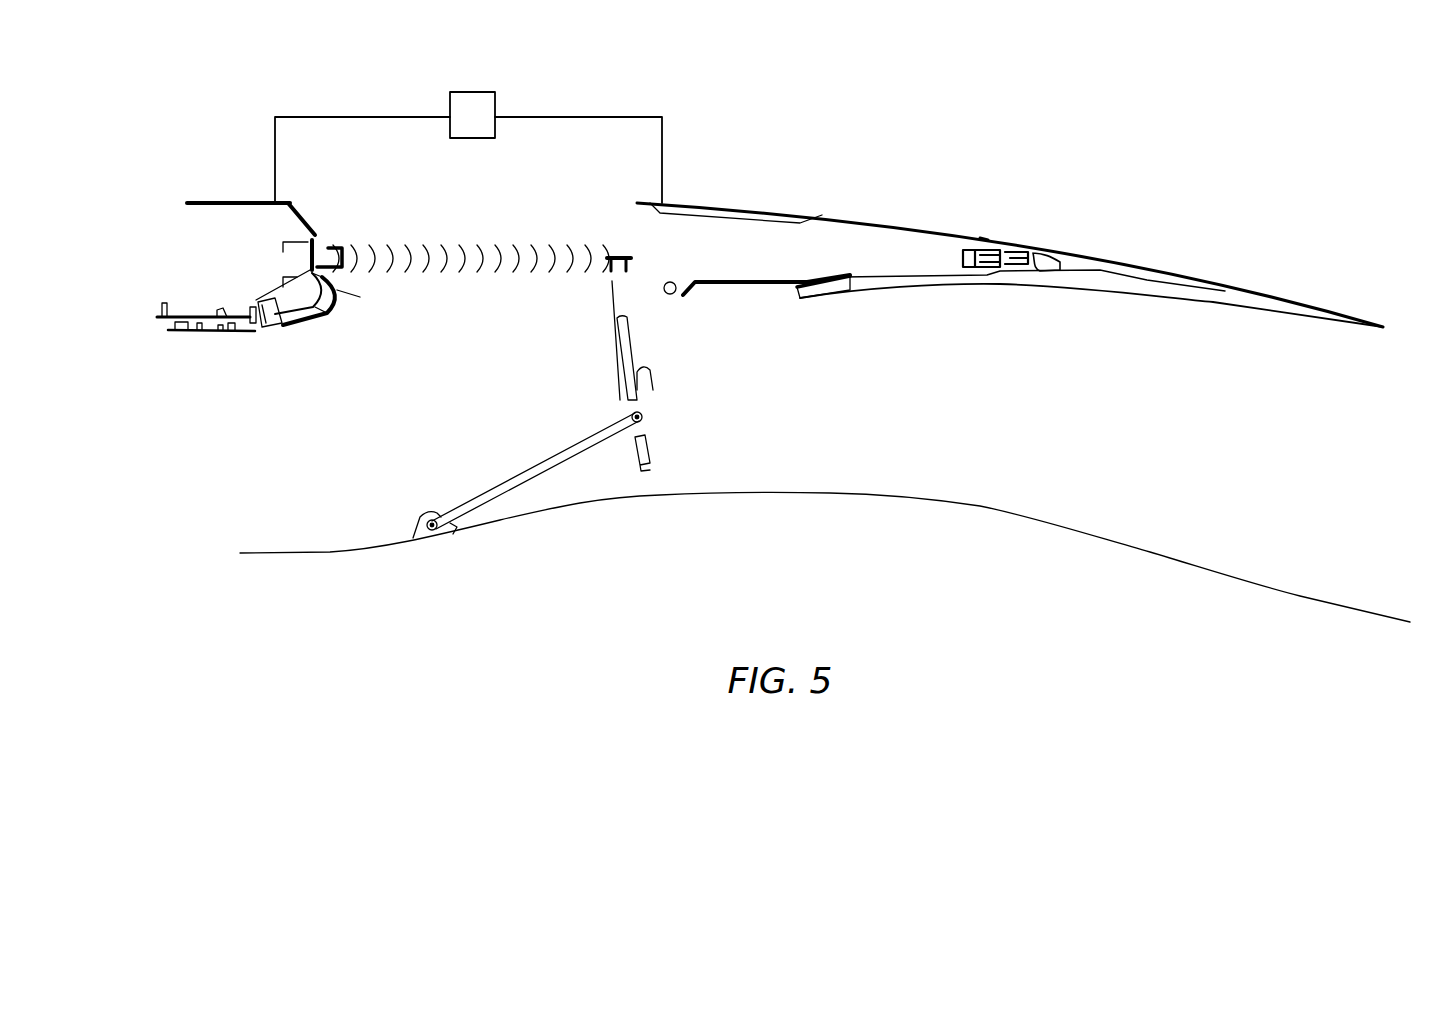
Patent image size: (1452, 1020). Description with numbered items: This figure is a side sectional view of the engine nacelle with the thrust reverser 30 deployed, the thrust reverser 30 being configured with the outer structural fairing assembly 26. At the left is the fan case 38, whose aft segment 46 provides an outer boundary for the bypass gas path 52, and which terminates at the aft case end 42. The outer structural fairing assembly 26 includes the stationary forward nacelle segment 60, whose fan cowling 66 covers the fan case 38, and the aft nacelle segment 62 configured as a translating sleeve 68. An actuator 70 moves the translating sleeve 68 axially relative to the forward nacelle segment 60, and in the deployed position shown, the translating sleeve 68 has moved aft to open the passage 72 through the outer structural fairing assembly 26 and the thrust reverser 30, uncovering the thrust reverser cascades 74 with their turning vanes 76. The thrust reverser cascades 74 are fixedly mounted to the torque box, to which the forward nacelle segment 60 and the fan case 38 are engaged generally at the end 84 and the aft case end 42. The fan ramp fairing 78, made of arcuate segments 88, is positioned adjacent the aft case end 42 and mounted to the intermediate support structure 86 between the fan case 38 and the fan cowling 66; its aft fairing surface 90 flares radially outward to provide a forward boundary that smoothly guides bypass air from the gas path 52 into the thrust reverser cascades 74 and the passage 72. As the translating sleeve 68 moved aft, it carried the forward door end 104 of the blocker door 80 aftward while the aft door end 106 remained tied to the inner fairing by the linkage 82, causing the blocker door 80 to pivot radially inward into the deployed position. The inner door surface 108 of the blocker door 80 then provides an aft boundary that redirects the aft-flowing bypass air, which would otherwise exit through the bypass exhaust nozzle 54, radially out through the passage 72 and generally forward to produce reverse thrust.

The outer structural fairing assembly 26 is at (928, 170).
The thrust reverser 30 is at (570, 156).
The fan case 38 is at (188, 340).
The aft case end 42 is at (258, 327).
The aft segment 46 is at (183, 313).
The gas path 52 is at (281, 478).
The bypass exhaust nozzle 54 is at (1236, 435).
The forward nacelle segment 60 is at (233, 158).
The fan cowling 66 is at (212, 200).
The aft nacelle segment 62 is at (1090, 250).
The translating sleeve 68 is at (1058, 250).
The actuator 70 is at (486, 126).
The passage 72 is at (383, 233).
The thrust reverser cascade 74 is at (478, 278).
The turning vane 76 is at (527, 262).
The fan ramp fairing 78 is at (330, 324).
The arcuate segment 88 is at (310, 312).
The blocker door 80 is at (636, 345).
The linkage 82 is at (532, 456).
The end 84 is at (298, 203).
The intermediate support structure 86 is at (305, 270).
The aft fairing surface 90 is at (293, 327).
The forward door end 104 is at (613, 280).
The aft door end 106 is at (650, 468).
The inner door surface 108 is at (630, 379).